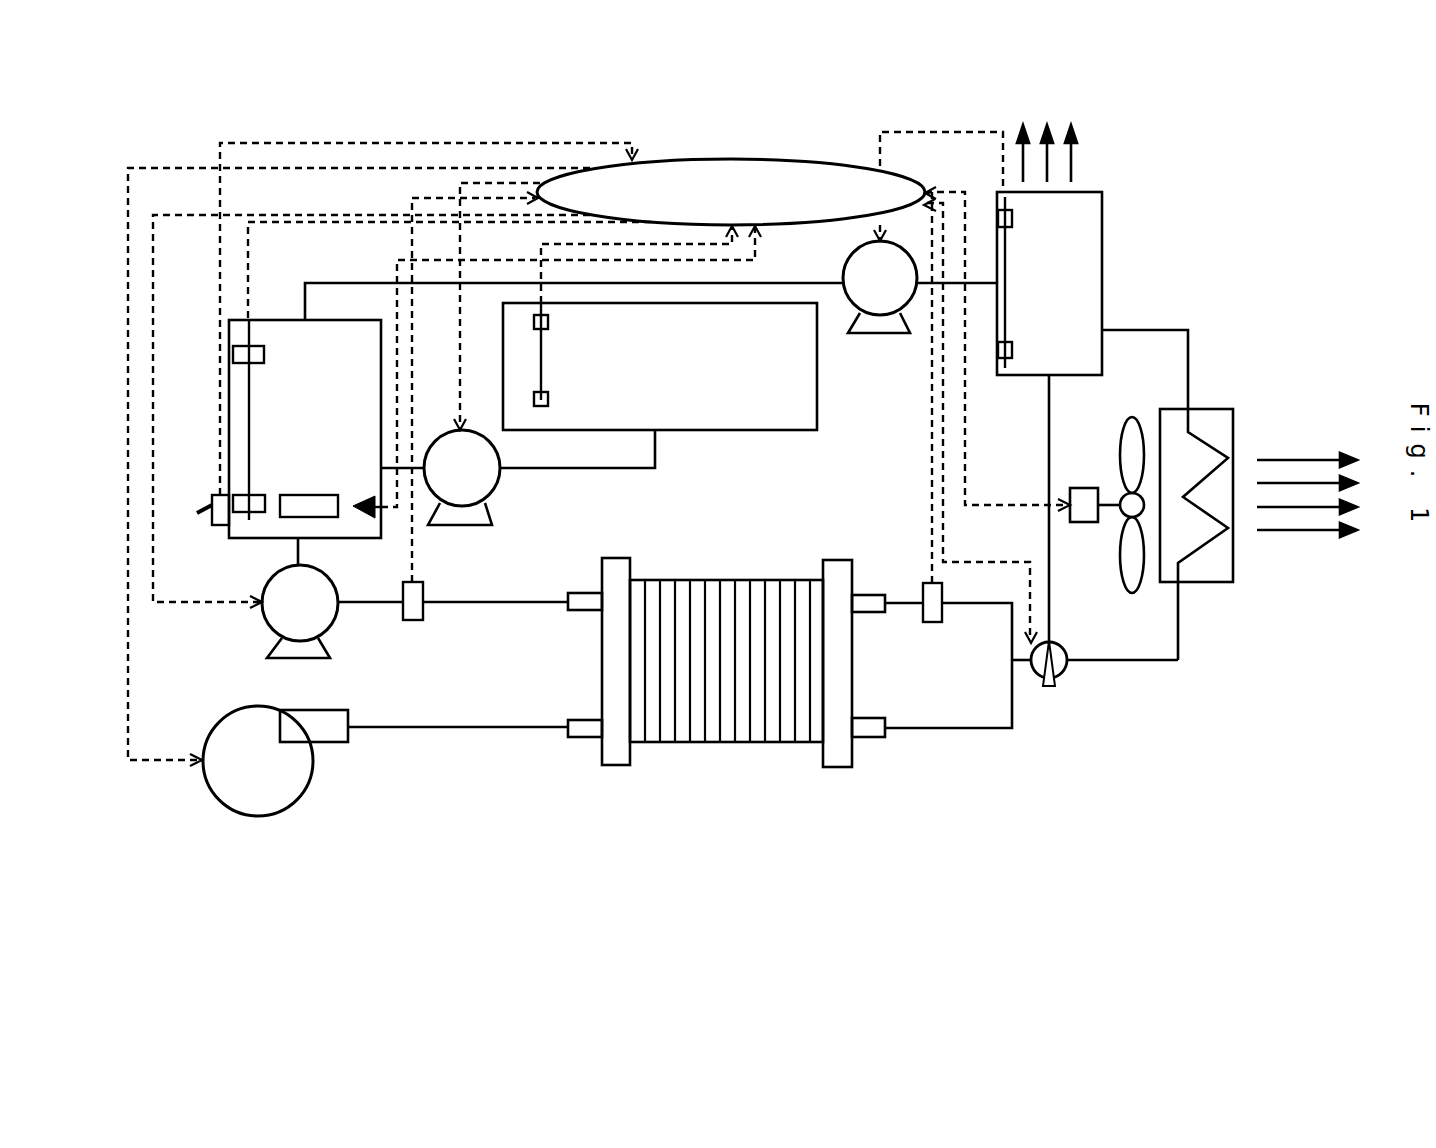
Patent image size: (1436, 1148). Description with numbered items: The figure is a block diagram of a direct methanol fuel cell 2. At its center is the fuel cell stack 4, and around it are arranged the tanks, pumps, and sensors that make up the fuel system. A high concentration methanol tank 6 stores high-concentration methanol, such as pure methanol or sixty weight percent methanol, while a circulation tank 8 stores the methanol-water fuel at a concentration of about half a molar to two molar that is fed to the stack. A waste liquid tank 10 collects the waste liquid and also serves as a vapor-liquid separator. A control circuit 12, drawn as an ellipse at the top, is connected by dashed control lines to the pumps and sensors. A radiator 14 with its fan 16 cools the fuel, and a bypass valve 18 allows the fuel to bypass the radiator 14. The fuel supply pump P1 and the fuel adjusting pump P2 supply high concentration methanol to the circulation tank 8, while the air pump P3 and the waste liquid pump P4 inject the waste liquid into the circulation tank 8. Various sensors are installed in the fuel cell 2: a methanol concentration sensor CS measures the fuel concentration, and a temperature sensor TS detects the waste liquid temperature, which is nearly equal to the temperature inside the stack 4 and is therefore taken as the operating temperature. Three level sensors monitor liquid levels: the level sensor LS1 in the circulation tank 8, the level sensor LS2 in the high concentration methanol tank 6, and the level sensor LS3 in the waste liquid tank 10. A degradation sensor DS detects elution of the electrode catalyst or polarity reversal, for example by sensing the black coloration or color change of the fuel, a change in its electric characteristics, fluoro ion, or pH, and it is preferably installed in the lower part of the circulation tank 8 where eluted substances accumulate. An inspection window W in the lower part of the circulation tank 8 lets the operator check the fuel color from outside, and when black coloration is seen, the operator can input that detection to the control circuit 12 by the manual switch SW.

The direct methanol fuel cell 2 is at (683, 899).
The fuel cell stack 4 is at (726, 680).
The high concentration methanol tank 6 is at (714, 421).
The circulation tank 8 is at (284, 318).
The waste liquid tank 10 is at (1087, 244).
The control circuit 12 is at (753, 170).
The radiator 14 is at (1222, 409).
The fan 16 is at (1122, 593).
The bypass valve 18 is at (1049, 690).
The fuel supply pump P1 is at (330, 620).
The fuel adjusting pump P2 is at (490, 487).
The air pump P3 is at (258, 795).
The waste liquid pump P4 is at (882, 335).
The level sensor LS1 is at (249, 428).
The level sensor LS2 is at (541, 358).
The level sensor LS3 is at (1007, 291).
The manual switch SW is at (216, 527).
The inspection window W is at (280, 512).
The degradation sensor DS is at (363, 518).
The methanol concentration sensor CS is at (412, 623).
The temperature sensor TS is at (932, 624).